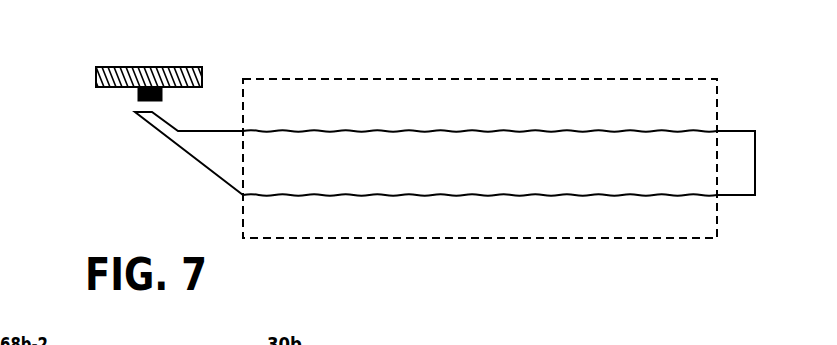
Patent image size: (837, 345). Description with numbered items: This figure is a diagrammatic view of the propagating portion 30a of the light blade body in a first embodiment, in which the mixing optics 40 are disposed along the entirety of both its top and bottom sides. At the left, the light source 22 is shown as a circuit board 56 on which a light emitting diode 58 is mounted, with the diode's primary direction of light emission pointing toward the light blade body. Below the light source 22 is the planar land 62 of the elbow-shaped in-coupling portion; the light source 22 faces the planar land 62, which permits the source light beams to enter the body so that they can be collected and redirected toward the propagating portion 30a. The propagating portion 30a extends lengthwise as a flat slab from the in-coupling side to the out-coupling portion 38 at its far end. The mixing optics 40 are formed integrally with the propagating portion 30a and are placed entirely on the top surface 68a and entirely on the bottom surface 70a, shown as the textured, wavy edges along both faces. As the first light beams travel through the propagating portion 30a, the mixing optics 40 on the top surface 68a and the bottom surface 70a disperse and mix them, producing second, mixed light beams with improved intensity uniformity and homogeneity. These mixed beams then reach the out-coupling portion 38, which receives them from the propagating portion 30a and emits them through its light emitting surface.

The light source 22 is at (215, 57).
The circuit board 56 is at (97, 81).
The light emitting diode 58 is at (137, 92).
The planar land 62 is at (136, 112).
The top surface 68a is at (387, 131).
The bottom surface 70a is at (365, 195).
The mixing optics 40 is at (487, 117).
The propagating portion 30a is at (616, 120).
The out-coupling portion 38 is at (746, 118).